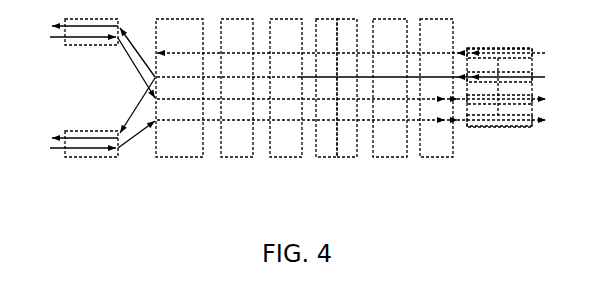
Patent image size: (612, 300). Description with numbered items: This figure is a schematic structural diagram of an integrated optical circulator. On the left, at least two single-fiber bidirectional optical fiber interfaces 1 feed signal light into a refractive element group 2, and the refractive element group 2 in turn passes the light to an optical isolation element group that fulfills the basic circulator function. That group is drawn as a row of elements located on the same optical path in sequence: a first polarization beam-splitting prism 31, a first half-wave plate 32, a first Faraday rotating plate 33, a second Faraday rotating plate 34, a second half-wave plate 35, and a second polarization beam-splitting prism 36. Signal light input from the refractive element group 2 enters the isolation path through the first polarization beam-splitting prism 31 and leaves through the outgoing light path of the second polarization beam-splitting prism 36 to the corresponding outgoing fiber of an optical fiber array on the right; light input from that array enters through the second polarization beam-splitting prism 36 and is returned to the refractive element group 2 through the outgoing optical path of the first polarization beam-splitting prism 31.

The single-fiber bidirectional optical fiber interface 1 is at (93, 131).
The refractive element group 2 is at (165, 157).
The first polarization beam-splitting prism 31 is at (228, 157).
The first half-wave plate 32 is at (276, 157).
The first Faraday rotating plate 33 is at (323, 157).
The second Faraday rotating plate 34 is at (339, 157).
The second half-wave plate 35 is at (378, 157).
The second polarization beam-splitting prism 36 is at (428, 157).